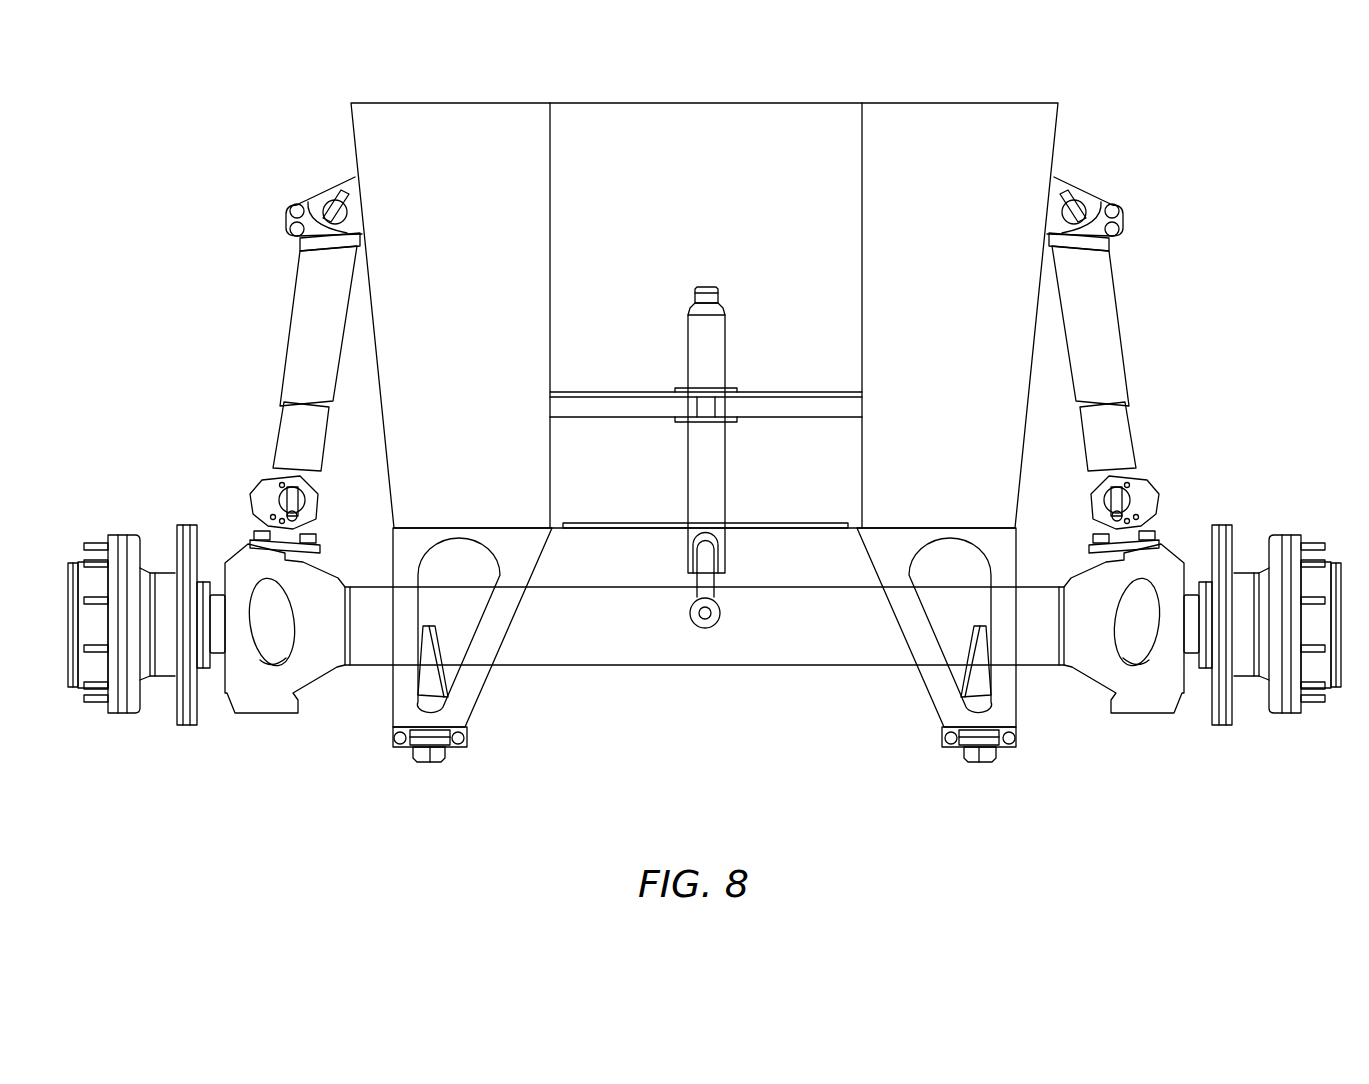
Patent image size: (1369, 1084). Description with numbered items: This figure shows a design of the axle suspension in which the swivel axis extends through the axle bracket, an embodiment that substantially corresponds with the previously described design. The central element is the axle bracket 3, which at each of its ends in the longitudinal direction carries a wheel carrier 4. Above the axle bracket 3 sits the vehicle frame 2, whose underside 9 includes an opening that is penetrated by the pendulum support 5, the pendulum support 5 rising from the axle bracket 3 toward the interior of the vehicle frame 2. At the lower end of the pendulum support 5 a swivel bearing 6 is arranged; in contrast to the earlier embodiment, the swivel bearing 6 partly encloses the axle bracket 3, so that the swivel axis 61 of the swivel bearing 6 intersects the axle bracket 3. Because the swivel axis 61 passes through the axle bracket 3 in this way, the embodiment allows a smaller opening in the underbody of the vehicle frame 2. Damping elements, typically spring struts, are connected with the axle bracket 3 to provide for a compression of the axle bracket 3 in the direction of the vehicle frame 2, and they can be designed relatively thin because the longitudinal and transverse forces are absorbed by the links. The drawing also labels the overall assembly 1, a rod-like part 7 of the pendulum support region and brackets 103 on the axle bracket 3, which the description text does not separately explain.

The steering axle assembly 1 is at (545, 779).
The vehicle frame 2 is at (343, 132).
The axle bracket 3 is at (692, 645).
The wheel carrier 4 is at (91, 533).
The pendulum support 5 is at (708, 483).
The swivel bearing 6 is at (687, 592).
The swivel axis 61 is at (713, 613).
The piston rod 7 is at (678, 386).
The underside 9 is at (608, 527).
The mounting bracket 103 is at (952, 702).